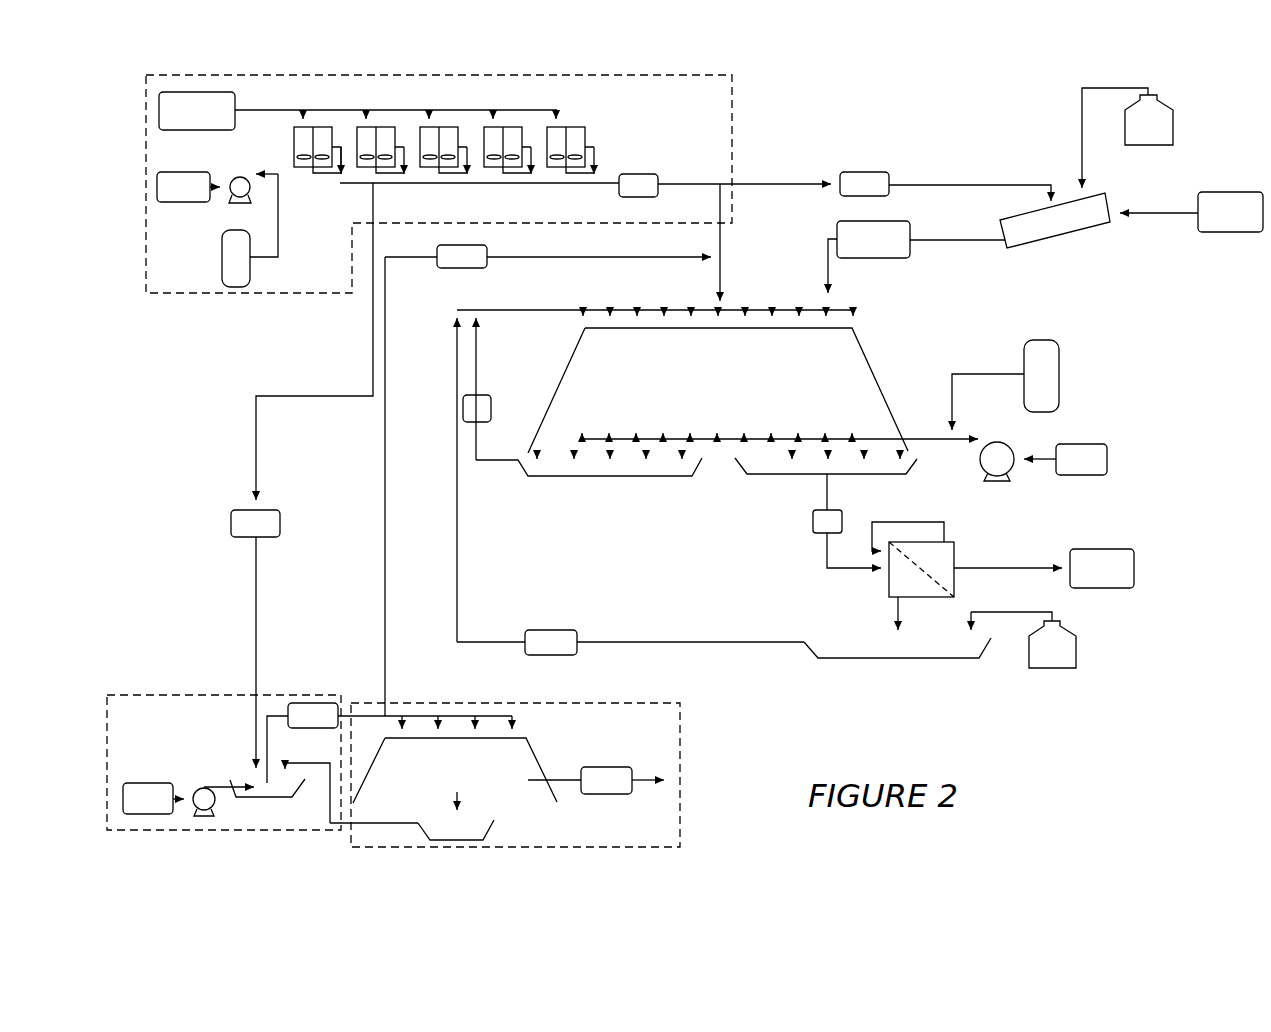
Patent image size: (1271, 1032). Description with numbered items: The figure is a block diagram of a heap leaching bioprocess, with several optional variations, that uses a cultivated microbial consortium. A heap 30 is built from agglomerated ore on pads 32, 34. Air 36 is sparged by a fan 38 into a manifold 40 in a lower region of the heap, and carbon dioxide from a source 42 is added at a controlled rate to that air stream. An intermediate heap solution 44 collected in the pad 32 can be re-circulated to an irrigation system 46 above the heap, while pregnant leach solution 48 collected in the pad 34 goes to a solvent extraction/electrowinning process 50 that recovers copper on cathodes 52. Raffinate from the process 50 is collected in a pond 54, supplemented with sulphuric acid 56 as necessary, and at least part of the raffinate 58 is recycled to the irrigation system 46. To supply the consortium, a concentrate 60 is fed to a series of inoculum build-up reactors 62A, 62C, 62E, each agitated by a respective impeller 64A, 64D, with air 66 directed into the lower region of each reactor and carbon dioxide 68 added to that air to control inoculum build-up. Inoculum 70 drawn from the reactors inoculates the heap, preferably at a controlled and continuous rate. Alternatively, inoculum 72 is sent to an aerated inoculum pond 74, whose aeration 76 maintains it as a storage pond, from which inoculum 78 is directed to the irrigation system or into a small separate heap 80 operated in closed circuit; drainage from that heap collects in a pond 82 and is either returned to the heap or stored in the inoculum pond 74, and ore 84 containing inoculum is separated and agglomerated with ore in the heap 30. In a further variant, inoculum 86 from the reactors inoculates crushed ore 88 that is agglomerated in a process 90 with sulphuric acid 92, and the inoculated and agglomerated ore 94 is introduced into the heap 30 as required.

The heap 30 is at (880, 378).
The pad 32 is at (548, 480).
The pad 34 is at (897, 477).
The air 36 is at (1100, 460).
The fan 38 is at (1000, 474).
The manifold 40 is at (855, 438).
The carbon dioxide source 42 is at (1050, 395).
The intermediate heap solution 44 is at (487, 396).
The irrigation system 46 is at (795, 305).
The pregnant leach solution 48 is at (812, 520).
The solvent extraction/electrowinning process 50 is at (888, 578).
The cathodes 52 is at (1130, 570).
The pond 54 is at (963, 660).
The sulphuric acid 56 is at (1063, 652).
The raffinate 58 is at (572, 632).
The concentrate 60 is at (162, 97).
The inoculum build-up reactor 62A is at (320, 135).
The inoculum build-up reactor 62C is at (450, 135).
The inoculum build-up reactor 62E is at (578, 135).
The impeller 64A is at (295, 157).
The impeller 64D is at (510, 160).
The air 66 is at (183, 200).
The carbon dioxide 68 is at (243, 272).
The inoculum 70 is at (650, 177).
The inoculum 72 is at (232, 530).
The inoculum pond 74 is at (280, 800).
The aeration 76 is at (135, 785).
The inoculum 78 is at (480, 263).
The small separate heap 80 is at (540, 757).
The pond 82 is at (470, 842).
The ore 84 is at (610, 797).
The inoculum 86 is at (865, 170).
The crushed ore 88 is at (1220, 228).
The agglomeration process 90 is at (1015, 240).
The sulphuric acid 92 is at (1165, 130).
The inoculated and agglomerated ore 94 is at (890, 255).